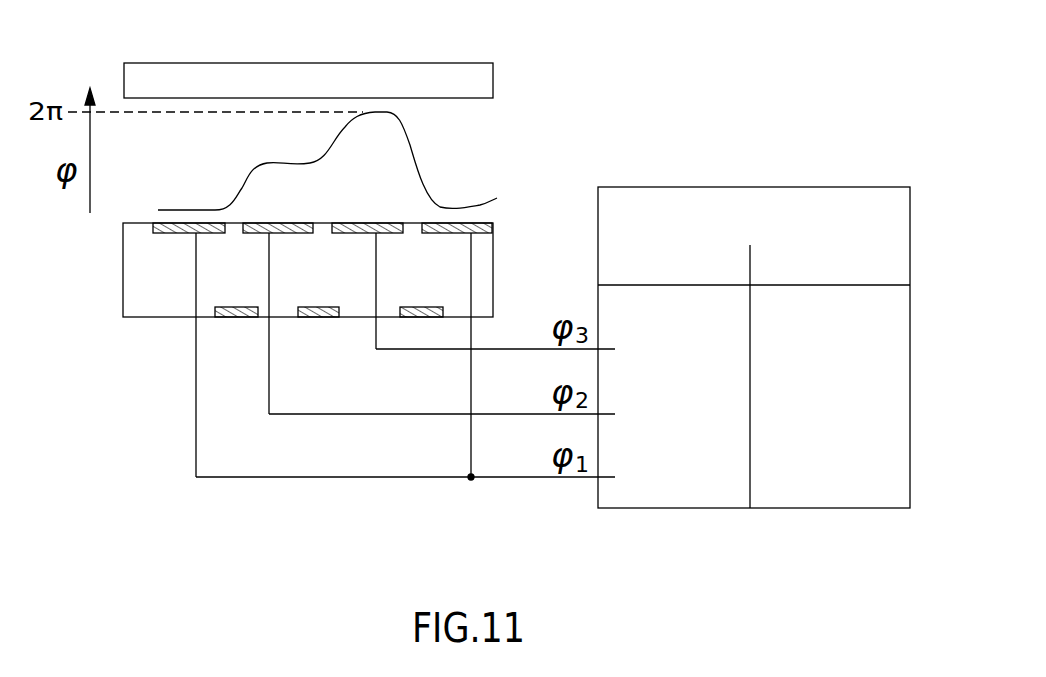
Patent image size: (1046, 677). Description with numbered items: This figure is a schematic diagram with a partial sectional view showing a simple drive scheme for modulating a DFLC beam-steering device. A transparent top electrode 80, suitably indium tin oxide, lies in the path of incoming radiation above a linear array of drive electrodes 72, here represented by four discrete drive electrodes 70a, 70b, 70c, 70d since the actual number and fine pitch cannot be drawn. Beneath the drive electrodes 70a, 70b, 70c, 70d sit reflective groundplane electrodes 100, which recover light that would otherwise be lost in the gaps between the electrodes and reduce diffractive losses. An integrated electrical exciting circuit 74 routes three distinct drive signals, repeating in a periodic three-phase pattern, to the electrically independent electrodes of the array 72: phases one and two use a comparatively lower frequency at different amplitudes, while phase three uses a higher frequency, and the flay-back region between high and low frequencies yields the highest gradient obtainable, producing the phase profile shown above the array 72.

The transparent top electrode 80 is at (493, 84).
The linear array of drive electrodes 72 is at (508, 233).
The reflective groundplane electrodes 100 is at (156, 307).
The drive electrode 70a is at (189, 233).
The drive electrode 70b is at (261, 233).
The drive electrode 70c is at (351, 234).
The drive electrode 70d is at (455, 236).
The integrated electrical exciting circuit 74 is at (757, 187).